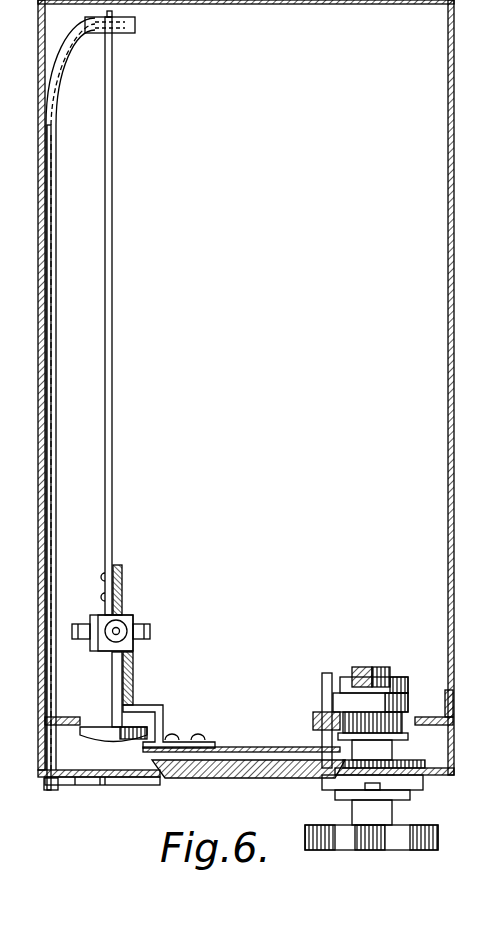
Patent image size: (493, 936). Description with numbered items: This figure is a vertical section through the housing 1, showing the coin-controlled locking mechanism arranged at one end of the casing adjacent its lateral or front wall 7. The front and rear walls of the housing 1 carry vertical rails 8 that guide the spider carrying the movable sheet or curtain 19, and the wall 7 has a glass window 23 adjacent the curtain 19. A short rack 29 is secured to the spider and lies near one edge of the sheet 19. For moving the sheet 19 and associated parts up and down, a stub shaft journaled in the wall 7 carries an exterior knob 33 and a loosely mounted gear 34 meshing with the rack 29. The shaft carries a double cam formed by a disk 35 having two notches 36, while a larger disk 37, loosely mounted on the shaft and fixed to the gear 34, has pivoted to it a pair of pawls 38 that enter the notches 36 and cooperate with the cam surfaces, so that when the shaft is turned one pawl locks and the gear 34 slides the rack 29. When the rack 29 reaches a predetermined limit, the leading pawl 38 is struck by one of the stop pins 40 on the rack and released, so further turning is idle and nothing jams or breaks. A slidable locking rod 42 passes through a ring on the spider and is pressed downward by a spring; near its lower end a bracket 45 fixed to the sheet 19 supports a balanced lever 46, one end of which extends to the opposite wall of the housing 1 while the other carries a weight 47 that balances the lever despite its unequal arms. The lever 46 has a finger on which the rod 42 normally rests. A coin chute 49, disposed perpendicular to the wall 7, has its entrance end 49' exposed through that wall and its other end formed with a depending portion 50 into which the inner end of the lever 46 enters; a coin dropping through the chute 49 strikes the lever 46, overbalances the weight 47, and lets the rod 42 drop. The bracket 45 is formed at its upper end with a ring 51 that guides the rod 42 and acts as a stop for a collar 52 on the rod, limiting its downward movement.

The housing 1 is at (455, 331).
The lateral wall 7 is at (105, 785).
The vertical rails 8 is at (65, 717).
The sheet or curtain 19 is at (234, 745).
The glass window 23 is at (222, 778).
The short rack 29 is at (313, 722).
The exterior knob 33 is at (378, 850).
The gear 34 is at (404, 728).
The disk 35 is at (383, 667).
The notches 36 is at (362, 667).
The larger disk 37 is at (408, 700).
The pawls 38 is at (346, 680).
The stop pins 40 is at (322, 690).
The locking rod 42 is at (133, 646).
The bracket 45 is at (134, 680).
The balanced lever 46 is at (113, 313).
The weight 47 is at (110, 742).
The coin chute 49 is at (71, 394).
The entrance end 49' is at (40, 473).
The depending portion 50 is at (135, 33).
The ring 51 is at (120, 626).
The collar 52 is at (120, 631).